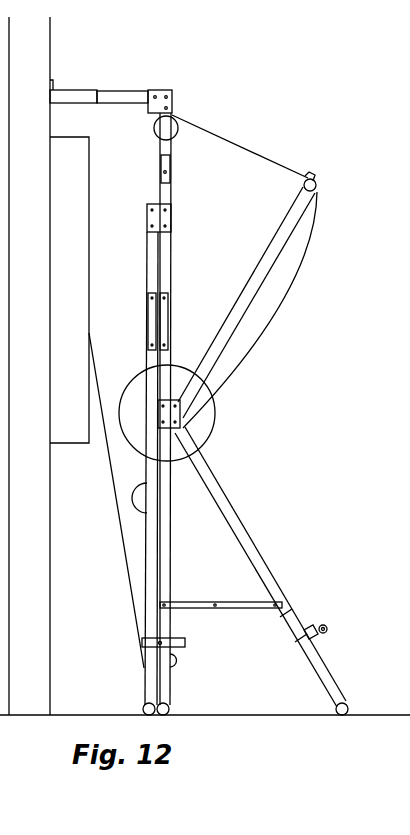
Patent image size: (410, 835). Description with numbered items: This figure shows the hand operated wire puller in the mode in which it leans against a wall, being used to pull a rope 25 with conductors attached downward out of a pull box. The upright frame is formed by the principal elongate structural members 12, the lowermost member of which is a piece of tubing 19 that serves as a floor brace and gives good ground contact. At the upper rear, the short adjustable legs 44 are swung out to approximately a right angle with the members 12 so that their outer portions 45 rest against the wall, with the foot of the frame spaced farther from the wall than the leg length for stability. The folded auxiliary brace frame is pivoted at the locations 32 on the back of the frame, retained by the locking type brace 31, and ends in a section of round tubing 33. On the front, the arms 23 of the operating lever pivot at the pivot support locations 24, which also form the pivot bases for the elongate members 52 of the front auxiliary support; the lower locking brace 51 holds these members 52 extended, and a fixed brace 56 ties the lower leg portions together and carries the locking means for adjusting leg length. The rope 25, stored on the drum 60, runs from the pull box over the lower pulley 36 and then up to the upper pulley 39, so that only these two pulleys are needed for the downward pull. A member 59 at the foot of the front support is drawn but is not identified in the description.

The elongate structural members 12 is at (170, 265).
The piece of tubing 19 is at (170, 708).
The arms 23 is at (295, 217).
The pivot support location 24 is at (183, 416).
The rope 25 is at (218, 133).
The locking type brace 31 is at (150, 311).
The pivot locations 32 is at (172, 215).
The section of round tubing 33 is at (143, 706).
The pulley 36 is at (174, 660).
The pulley 39 is at (155, 129).
The short upper legs 44 is at (110, 97).
The outer portions 45 is at (92, 50).
The lower locking brace 51 is at (244, 609).
The elongate members 52 is at (232, 510).
The fixed brace 56 is at (318, 638).
The wheel 59 is at (346, 705).
The drum 60 is at (200, 395).